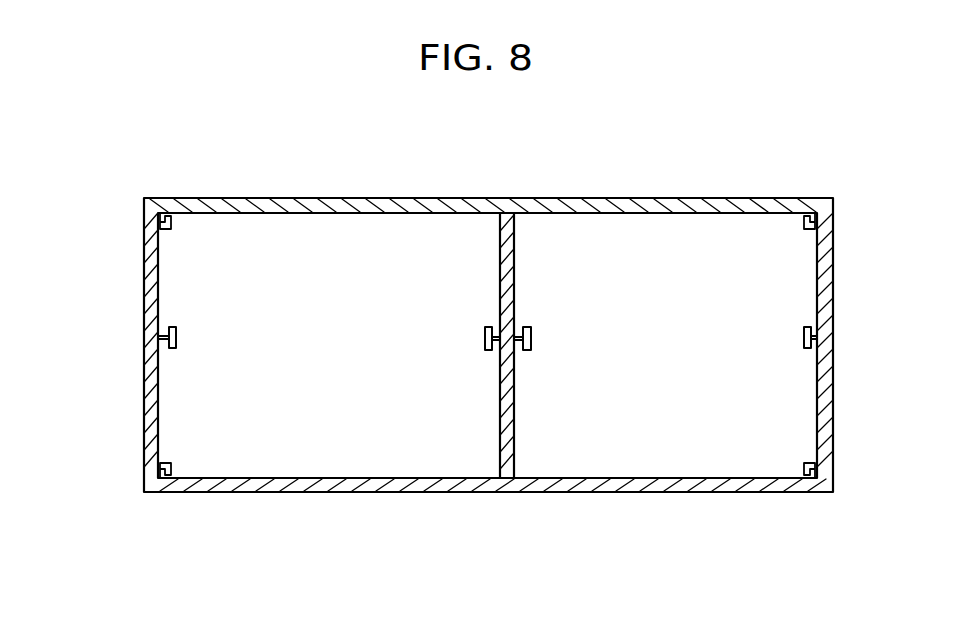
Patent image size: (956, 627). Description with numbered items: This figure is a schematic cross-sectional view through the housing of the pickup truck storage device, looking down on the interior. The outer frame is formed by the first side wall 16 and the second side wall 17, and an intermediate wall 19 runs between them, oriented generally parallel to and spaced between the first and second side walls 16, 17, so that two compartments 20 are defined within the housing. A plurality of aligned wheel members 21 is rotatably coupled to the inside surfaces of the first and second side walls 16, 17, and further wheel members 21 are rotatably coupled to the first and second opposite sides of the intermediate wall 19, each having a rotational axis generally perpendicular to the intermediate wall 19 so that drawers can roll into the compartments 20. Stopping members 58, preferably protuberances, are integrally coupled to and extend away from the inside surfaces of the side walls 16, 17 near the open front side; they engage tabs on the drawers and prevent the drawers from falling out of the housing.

The first side wall 16 is at (834, 268).
The second side wall 17 is at (145, 222).
The intermediate wall 19 is at (497, 222).
The compartments 20 is at (262, 258).
The wheel members 21 is at (485, 337).
The stopping members 58 is at (163, 214).